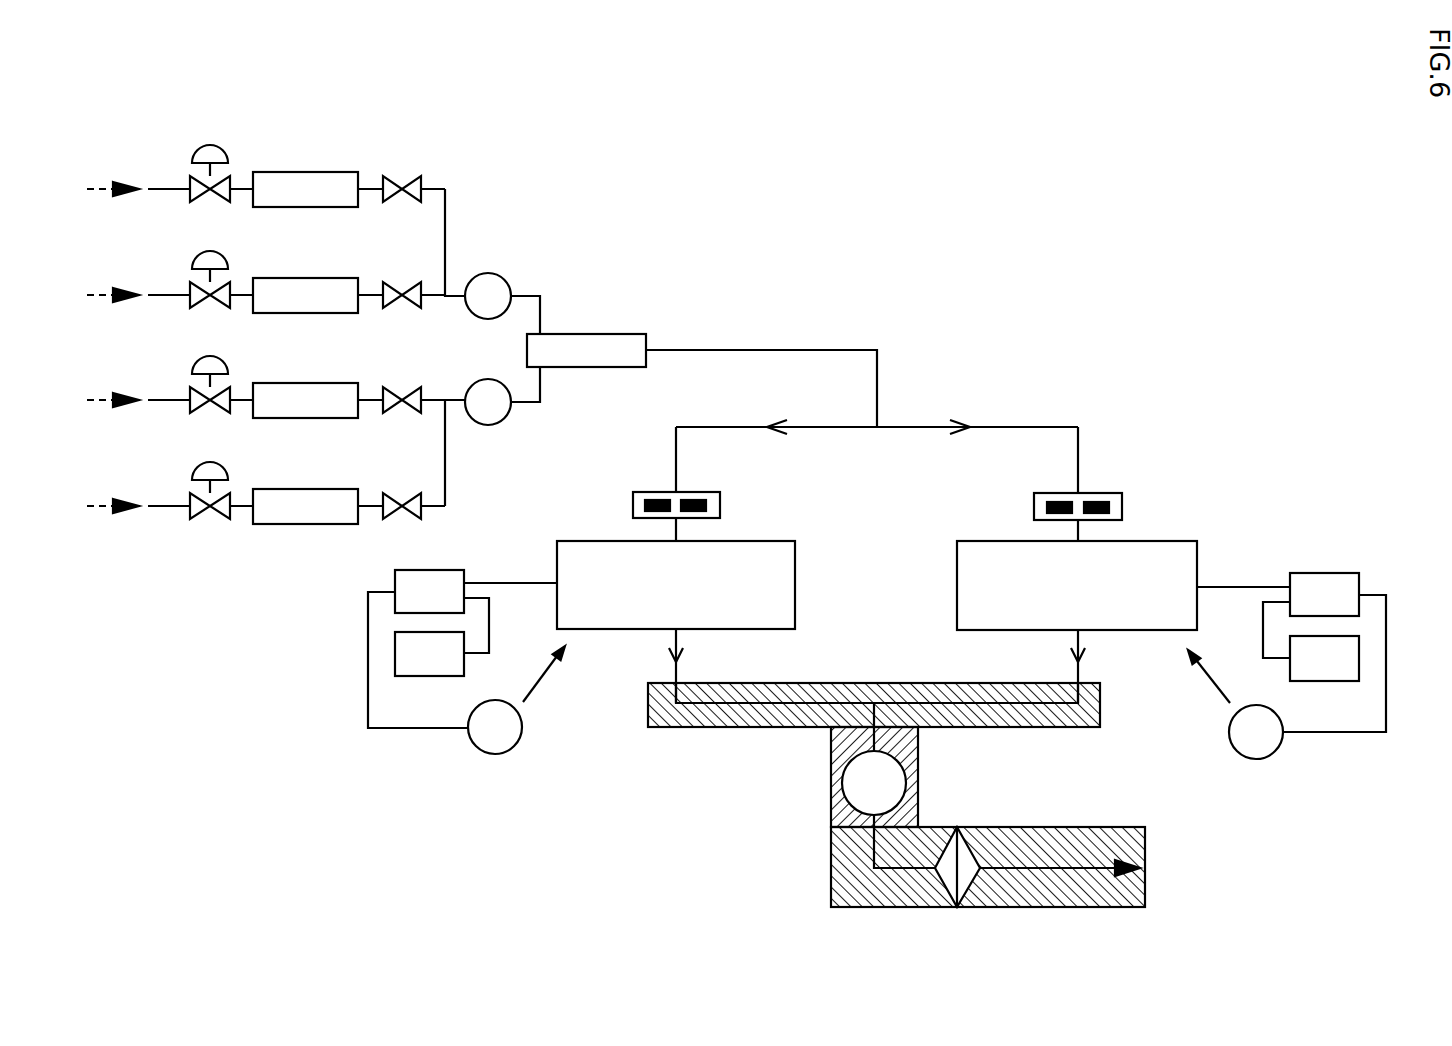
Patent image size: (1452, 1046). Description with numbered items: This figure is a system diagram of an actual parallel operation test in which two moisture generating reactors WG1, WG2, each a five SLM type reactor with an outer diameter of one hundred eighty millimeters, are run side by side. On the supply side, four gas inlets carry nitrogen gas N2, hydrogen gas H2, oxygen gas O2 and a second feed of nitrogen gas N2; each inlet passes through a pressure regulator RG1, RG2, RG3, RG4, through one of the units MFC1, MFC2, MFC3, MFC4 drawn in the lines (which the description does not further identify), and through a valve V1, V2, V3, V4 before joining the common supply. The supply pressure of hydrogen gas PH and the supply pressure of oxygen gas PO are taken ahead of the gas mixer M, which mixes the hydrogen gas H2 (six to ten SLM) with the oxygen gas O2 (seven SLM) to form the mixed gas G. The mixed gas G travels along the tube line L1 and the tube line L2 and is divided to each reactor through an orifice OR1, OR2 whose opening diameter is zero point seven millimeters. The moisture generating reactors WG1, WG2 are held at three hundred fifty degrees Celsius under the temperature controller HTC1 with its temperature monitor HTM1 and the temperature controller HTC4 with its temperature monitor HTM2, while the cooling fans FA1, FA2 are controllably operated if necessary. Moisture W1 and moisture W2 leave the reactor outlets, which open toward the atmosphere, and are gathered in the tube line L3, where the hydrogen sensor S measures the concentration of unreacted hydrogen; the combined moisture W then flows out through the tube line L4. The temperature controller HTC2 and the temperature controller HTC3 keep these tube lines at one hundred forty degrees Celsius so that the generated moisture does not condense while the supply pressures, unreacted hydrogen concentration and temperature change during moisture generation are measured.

The nitrogen gas N2 is at (113, 326).
The hydrogen gas H2 is at (113, 274).
The oxygen gas O2 is at (113, 379).
The pressure regulator RG1 is at (214, 158).
The pressure regulator RG2 is at (214, 264).
The pressure regulator RG3 is at (214, 369).
The pressure regulator RG4 is at (214, 475).
The mass flow controller MFC1 is at (305, 189).
The mass flow controller MFC2 is at (305, 295).
The mass flow controller MFC3 is at (305, 400).
The mass flow controller MFC4 is at (305, 506).
The valve V1 is at (402, 174).
The valve V2 is at (402, 280).
The valve V3 is at (402, 385).
The valve V4 is at (402, 491).
The supply pressure of hydrogen gas PH is at (488, 296).
The supply pressure of oxygen gas PO is at (488, 402).
The gas mixer M is at (603, 334).
The tube line L1 is at (858, 351).
The tube line L2 is at (1000, 427).
The mixed gas G is at (868, 412).
The orifice OR1 is at (720, 505).
The orifice OR2 is at (1122, 506).
The moisture generating reactor WG1 is at (797, 558).
The moisture generating reactor WG2 is at (957, 592).
The temperature controller HTC1 is at (429, 591).
The temperature monitor HTM1 is at (429, 654).
The temperature controller HTC4 is at (1324, 594).
The temperature monitor HTM2 is at (1324, 658).
The cooling fan FA1 is at (495, 754).
The cooling fan FA2 is at (1256, 759).
The moisture W1 is at (697, 666).
The moisture W2 is at (1100, 666).
The tube line L3 is at (827, 703).
The temperature controller HTC2 is at (672, 727).
The hydrogen sensor S is at (874, 783).
The temperature controller HTC3 is at (831, 877).
The tube line L4 is at (1020, 868).
The moisture W is at (1075, 868).